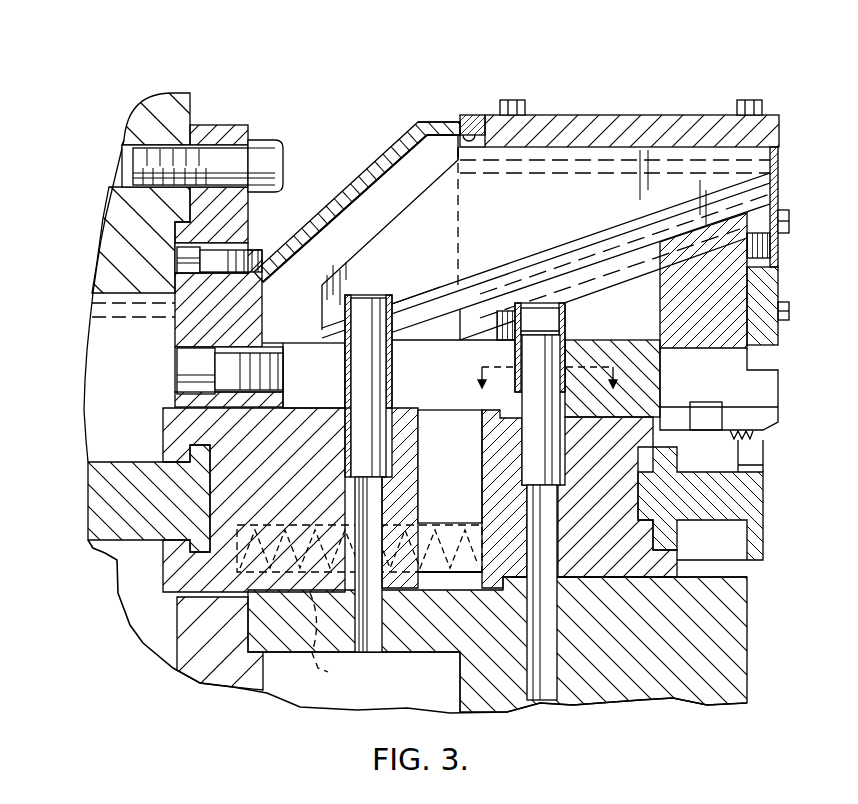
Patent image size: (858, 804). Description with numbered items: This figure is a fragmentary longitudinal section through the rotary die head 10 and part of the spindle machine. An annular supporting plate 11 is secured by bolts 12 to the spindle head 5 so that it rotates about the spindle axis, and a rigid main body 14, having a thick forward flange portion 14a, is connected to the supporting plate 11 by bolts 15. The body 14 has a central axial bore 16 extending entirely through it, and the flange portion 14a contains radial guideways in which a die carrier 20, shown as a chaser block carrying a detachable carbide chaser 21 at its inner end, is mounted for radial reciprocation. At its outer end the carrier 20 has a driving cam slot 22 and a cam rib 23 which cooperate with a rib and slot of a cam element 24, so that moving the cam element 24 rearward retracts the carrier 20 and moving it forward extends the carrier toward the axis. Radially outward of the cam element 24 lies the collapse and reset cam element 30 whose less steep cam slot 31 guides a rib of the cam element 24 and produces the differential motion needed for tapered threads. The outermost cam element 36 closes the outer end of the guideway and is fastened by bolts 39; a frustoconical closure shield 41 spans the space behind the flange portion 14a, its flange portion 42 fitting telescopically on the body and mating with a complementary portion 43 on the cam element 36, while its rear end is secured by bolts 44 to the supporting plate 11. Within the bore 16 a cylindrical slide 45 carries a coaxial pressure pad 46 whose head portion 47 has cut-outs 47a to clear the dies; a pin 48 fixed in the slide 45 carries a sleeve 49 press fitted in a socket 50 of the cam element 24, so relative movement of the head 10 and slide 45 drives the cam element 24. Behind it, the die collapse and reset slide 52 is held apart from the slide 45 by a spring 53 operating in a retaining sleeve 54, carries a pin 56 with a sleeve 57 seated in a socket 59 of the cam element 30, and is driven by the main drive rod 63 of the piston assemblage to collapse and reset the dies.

The spindle head 5 is at (193, 95).
The annular supporting plate 11 is at (213, 125).
The bolts 12 is at (268, 140).
The bolts 44 is at (223, 237).
The bolts 15 is at (262, 322).
The frustoconical closure shield 41 is at (385, 150).
The flange portion 42 is at (447, 121).
The complementary portion 43 is at (480, 132).
The collapse and reset cam element 30 is at (377, 225).
The outermost cam element 36 is at (632, 113).
The bolts 39 is at (513, 100).
The die head 10 is at (565, 113).
The cam rib 23 is at (760, 233).
The driving cam slot 22 is at (765, 283).
The cam element 24 is at (601, 232).
The cam slot 31 is at (416, 300).
The die carrier 20 is at (755, 348).
The carbide chaser 21 is at (765, 416).
The cut-outs 47a is at (755, 462).
The head portion 47 is at (768, 512).
The pressure pad 46 is at (697, 522).
The cylindrical slide 45 is at (617, 458).
The main body 14 is at (297, 653).
The central axial bore 16 is at (722, 578).
The forward flange portion 14a is at (456, 192).
The retaining sleeve 54 is at (447, 652).
The die collapse and reset slide 52 is at (254, 500).
The main drive rod 63 is at (108, 545).
The spring 53 is at (359, 607).
The sleeve 57 is at (392, 372).
The socket 59 is at (355, 310).
The pin 56 is at (400, 440).
The sleeve 49 is at (513, 388).
The pin 48 is at (515, 463).
The socket 50 is at (540, 302).